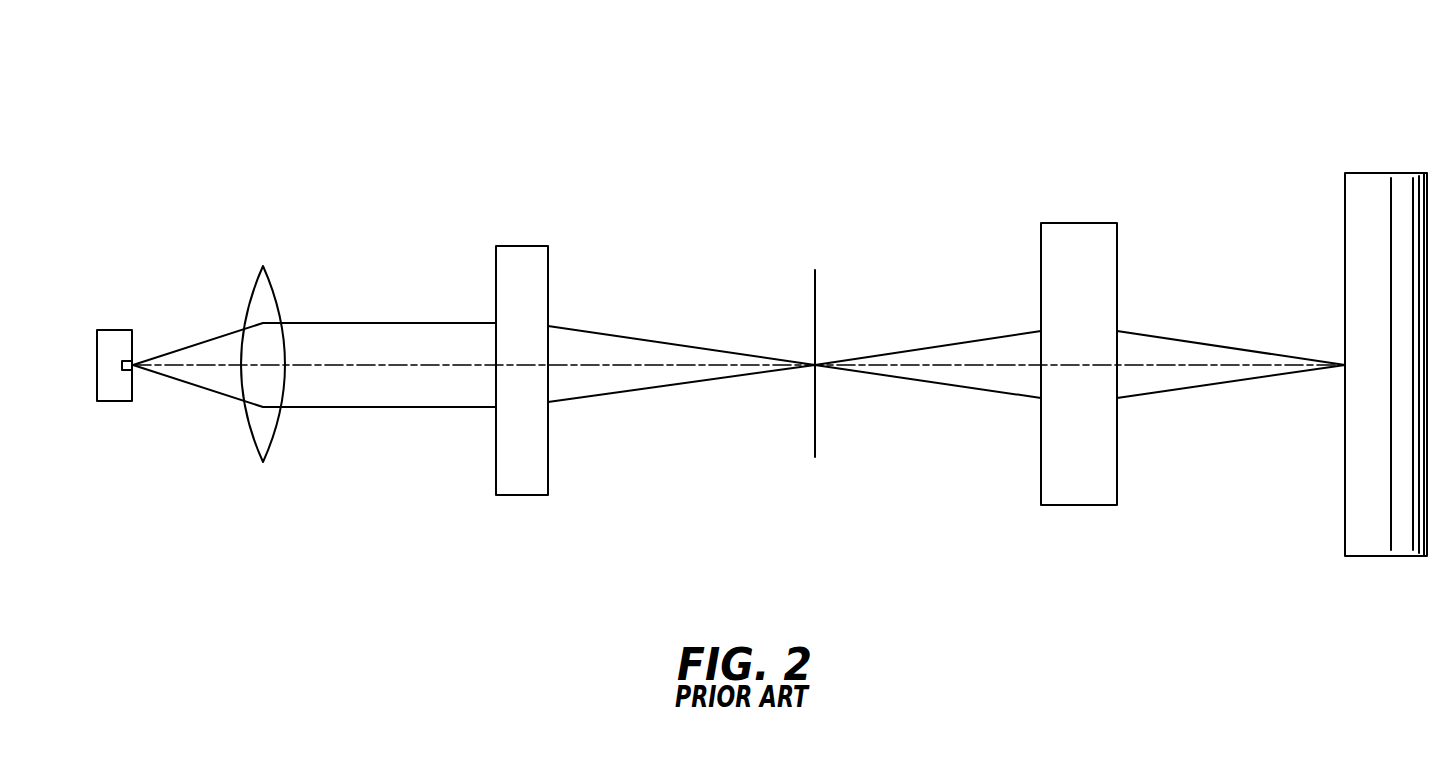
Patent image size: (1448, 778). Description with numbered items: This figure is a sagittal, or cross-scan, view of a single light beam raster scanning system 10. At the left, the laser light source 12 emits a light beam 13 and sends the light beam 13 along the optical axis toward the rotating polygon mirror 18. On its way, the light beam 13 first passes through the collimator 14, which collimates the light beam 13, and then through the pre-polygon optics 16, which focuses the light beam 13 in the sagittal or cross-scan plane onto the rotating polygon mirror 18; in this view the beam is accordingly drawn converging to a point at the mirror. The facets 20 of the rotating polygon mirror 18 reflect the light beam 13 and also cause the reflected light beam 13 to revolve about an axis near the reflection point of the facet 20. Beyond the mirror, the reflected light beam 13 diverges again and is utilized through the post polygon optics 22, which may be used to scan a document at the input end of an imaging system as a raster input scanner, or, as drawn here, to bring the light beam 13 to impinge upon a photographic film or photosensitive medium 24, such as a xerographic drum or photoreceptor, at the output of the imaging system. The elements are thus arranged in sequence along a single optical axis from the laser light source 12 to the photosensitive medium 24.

The raster scanning system 10 is at (562, 68).
The laser light source 12 is at (113, 330).
The light beam 13 is at (197, 342).
The collimator 14 is at (272, 287).
The pre-polygon optics 16 is at (525, 246).
The rotating polygon mirror 18 is at (804, 260).
The facet 20 is at (818, 418).
The post polygon optics 22 is at (1082, 223).
The photosensitive medium 24 is at (1397, 173).